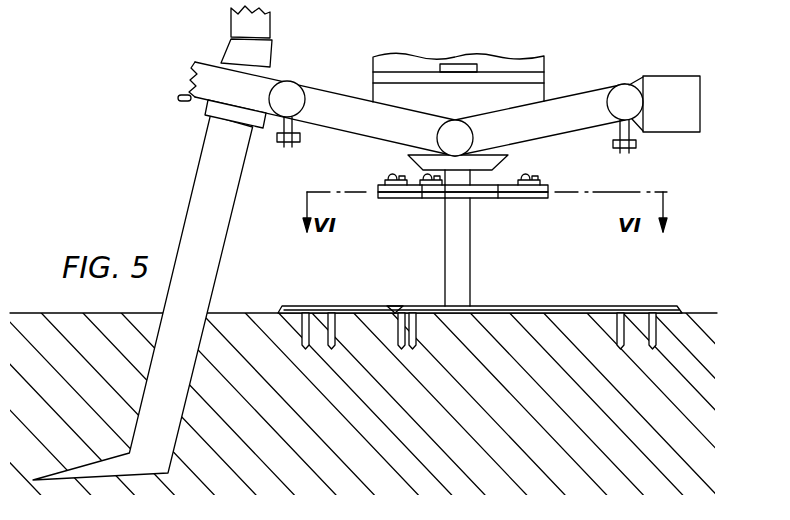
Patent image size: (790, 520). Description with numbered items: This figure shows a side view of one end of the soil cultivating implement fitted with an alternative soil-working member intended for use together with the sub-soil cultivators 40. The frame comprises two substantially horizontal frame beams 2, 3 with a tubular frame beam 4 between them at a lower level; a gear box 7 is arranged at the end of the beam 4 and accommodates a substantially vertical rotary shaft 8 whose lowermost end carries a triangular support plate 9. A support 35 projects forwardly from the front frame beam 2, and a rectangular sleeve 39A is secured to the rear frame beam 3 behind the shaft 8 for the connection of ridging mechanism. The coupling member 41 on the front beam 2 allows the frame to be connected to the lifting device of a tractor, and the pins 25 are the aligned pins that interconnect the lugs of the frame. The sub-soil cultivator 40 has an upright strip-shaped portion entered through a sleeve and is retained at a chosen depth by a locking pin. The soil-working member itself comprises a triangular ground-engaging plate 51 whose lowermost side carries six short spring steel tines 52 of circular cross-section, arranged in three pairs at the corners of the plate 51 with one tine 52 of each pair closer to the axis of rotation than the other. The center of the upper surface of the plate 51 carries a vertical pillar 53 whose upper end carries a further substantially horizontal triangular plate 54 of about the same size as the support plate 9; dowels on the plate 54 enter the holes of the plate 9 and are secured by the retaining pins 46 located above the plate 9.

The frame beam 2 is at (291, 92).
The frame beam 3 is at (618, 98).
The tubular frame beam 4 is at (453, 133).
The gear box 7 is at (383, 80).
The rotary shaft 8 is at (470, 178).
The support plate 9 is at (500, 191).
The pins 25 is at (300, 140).
The support 35 is at (197, 58).
The rectangular sleeve 39A is at (687, 58).
The sub-soil cultivator 40 is at (198, 198).
The coupling member 41 is at (240, 22).
The retaining pin 46 is at (395, 177).
The ground-engaging plate 51 is at (325, 282).
The tine 52 is at (331, 340).
The pillar 53 is at (450, 238).
The triangular plate 54 is at (420, 198).